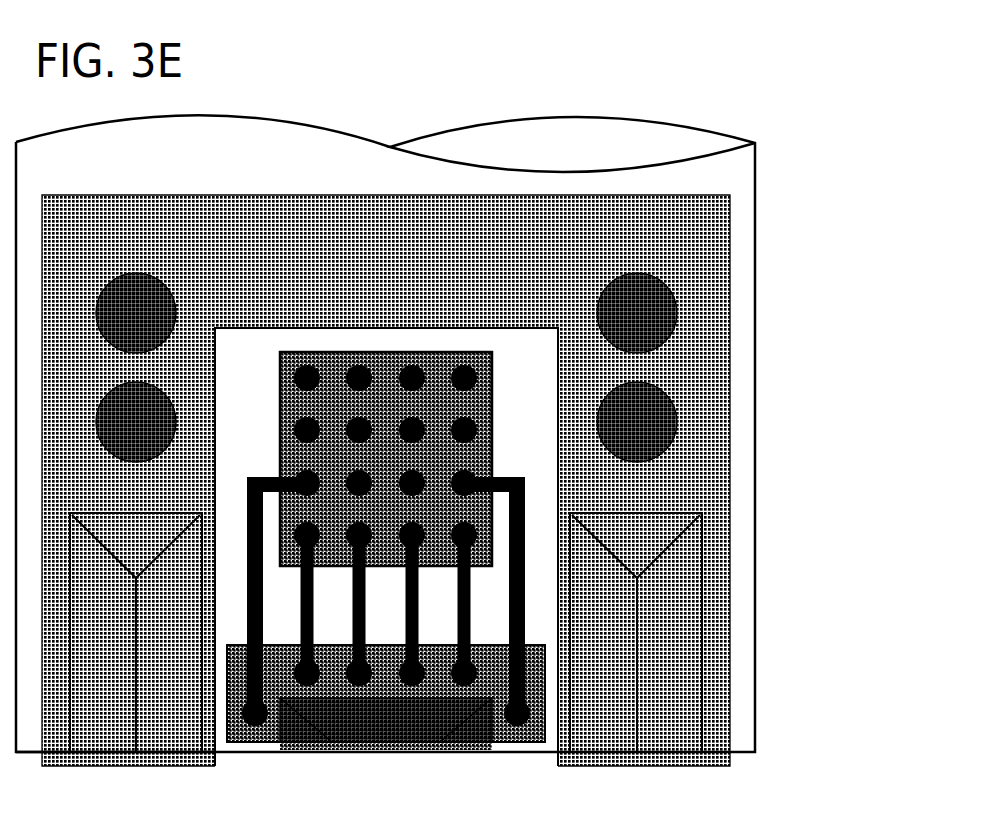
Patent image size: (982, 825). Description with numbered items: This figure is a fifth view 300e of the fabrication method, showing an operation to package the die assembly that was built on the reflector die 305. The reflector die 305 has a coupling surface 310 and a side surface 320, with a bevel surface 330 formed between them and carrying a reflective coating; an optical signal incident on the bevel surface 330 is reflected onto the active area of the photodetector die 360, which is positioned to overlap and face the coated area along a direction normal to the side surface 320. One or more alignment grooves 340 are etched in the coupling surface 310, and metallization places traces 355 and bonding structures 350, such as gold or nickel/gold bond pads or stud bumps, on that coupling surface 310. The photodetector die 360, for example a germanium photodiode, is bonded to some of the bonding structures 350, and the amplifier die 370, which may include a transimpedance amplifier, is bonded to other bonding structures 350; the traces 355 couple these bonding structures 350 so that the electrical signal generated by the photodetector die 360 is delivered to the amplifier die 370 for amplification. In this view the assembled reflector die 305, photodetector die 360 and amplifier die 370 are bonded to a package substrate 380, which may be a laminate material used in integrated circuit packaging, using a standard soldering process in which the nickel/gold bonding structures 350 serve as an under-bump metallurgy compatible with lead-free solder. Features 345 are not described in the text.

The fifth view 300e is at (400, 98).
The reflector die 305 is at (676, 155).
The coupling surface 310 is at (247, 195).
The side surface 320 is at (27, 762).
The bevel surface 330 is at (347, 756).
The alignment grooves 340 is at (192, 616).
The lower alignment feature 345 is at (152, 431).
The bonding structures 350 is at (152, 322).
The traces 355 is at (336, 631).
The photodetector die 360 is at (492, 678).
The amplifier die 370 is at (470, 471).
The package substrate 380 is at (500, 273).